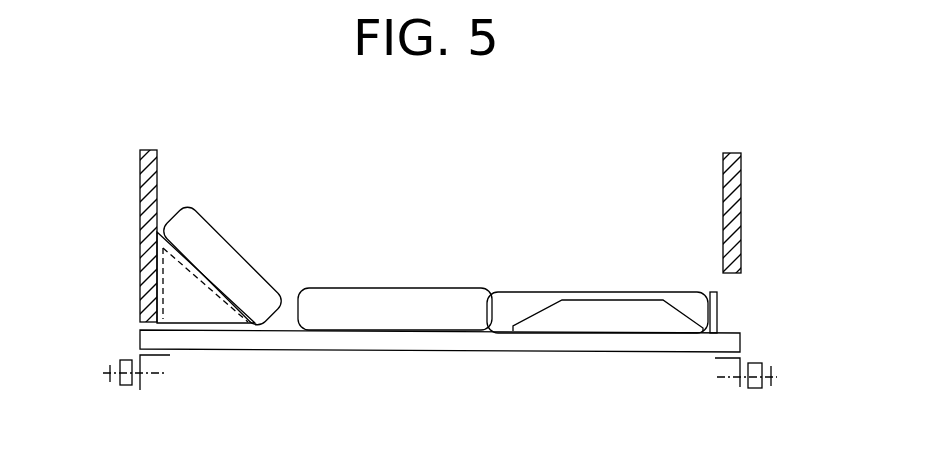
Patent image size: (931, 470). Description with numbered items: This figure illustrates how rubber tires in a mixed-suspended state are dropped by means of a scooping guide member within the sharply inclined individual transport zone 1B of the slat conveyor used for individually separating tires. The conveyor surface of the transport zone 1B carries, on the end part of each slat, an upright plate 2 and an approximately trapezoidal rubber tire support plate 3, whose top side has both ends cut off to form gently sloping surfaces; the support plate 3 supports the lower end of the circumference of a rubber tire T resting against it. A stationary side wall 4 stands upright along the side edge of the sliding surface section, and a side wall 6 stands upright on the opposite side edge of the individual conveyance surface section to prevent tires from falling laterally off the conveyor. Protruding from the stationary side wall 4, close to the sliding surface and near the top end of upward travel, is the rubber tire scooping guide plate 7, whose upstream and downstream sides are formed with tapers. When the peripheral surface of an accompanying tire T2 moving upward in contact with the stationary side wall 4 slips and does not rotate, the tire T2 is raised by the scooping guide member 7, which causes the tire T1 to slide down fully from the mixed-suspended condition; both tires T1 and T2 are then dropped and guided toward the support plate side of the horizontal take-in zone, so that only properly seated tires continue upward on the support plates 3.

The sharply inclined individual transport zone 1B is at (422, 340).
The upright plate 2 is at (718, 309).
The rubber tire support plate 3 is at (620, 310).
The stationary side wall 4 is at (150, 217).
The side wall 6 is at (742, 206).
The rubber tire scooping guide plate 7 is at (173, 290).
The rubber tire T is at (535, 292).
The tire T1 is at (376, 290).
The tire T2 is at (232, 240).